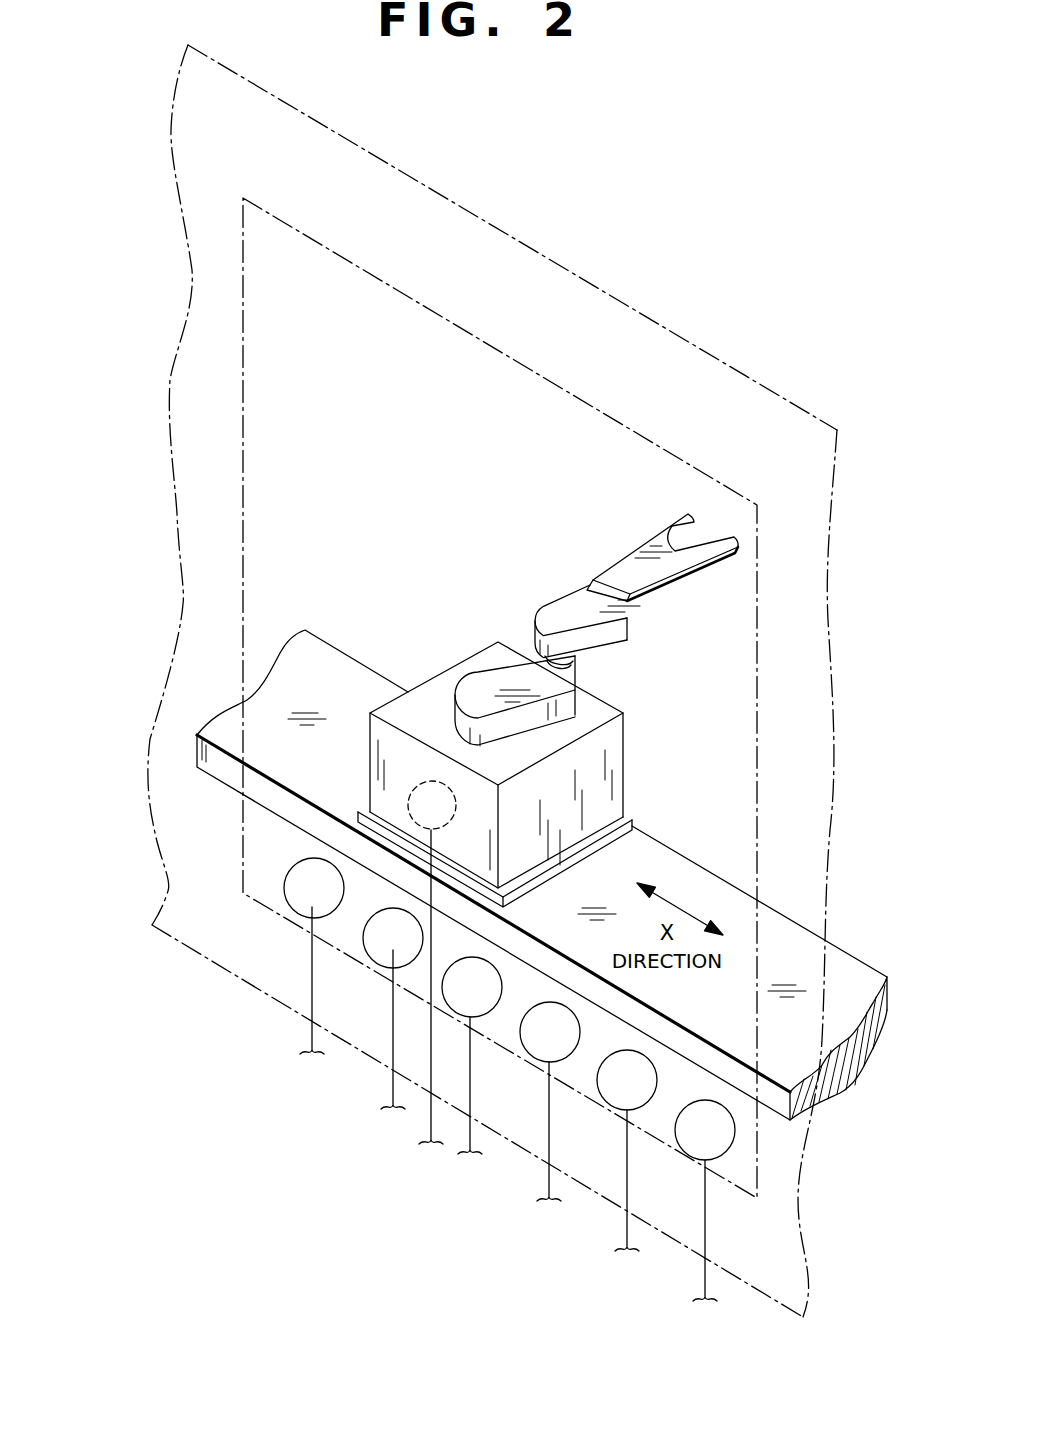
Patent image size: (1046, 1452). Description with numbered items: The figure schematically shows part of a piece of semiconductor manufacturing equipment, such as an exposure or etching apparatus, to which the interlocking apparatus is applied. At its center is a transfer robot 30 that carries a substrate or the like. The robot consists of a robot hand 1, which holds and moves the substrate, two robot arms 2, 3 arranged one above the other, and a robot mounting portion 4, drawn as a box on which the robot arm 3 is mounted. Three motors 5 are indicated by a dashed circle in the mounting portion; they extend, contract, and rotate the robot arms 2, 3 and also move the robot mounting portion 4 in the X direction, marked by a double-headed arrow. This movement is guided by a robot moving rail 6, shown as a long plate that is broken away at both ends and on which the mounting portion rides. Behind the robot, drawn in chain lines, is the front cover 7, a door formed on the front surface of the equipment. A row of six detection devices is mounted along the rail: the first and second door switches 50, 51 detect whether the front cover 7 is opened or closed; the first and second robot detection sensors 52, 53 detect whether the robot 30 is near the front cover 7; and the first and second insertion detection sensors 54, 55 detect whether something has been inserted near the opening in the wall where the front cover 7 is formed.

The robot hand 1 is at (667, 553).
The robot arm 2 is at (625, 628).
The robot arm 3 is at (560, 682).
The robot mounting portion 4 is at (600, 714).
The motor 5 is at (413, 803).
The robot moving rail 6 is at (847, 970).
The front cover (door) 7 is at (757, 813).
The transfer robot 30 is at (450, 628).
The first door switch 50 is at (703, 1133).
The second door switch 51 is at (625, 1085).
The first robot detection sensor 52 is at (548, 1035).
The second robot detection sensor 53 is at (463, 1017).
The first insertion detection sensor 54 is at (387, 967).
The second insertion detection sensor 55 is at (308, 933).